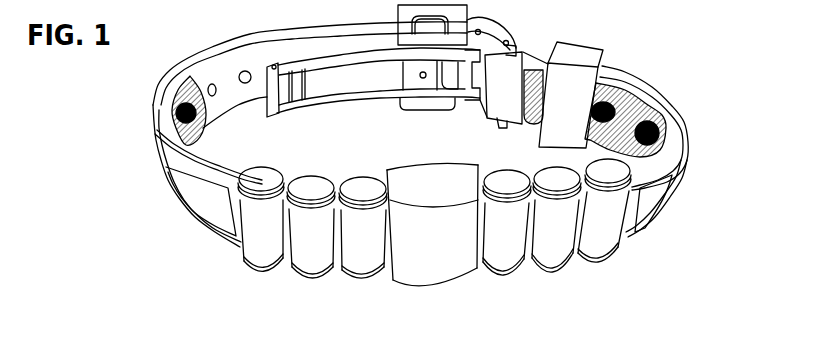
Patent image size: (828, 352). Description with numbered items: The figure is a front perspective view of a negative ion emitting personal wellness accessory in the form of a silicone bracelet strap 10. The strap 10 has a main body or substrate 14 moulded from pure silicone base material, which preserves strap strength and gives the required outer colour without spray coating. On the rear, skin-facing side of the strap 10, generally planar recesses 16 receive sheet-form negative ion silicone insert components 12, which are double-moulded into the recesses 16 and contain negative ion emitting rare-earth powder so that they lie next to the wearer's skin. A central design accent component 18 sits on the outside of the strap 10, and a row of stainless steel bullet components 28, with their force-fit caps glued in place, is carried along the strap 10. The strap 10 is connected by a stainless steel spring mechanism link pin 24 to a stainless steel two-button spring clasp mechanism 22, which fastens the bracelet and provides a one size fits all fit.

The silicone strap 10 is at (666, 72).
The negative ion silicone insert component 12 is at (182, 133).
The substrate 14 is at (672, 148).
The recess 16 is at (196, 78).
The central design accent component 18 is at (439, 269).
The two-button spring clasp mechanism 22 is at (358, 107).
The spring mechanism link pin 24 is at (512, 43).
The stainless steel bullet component 28 is at (356, 191).